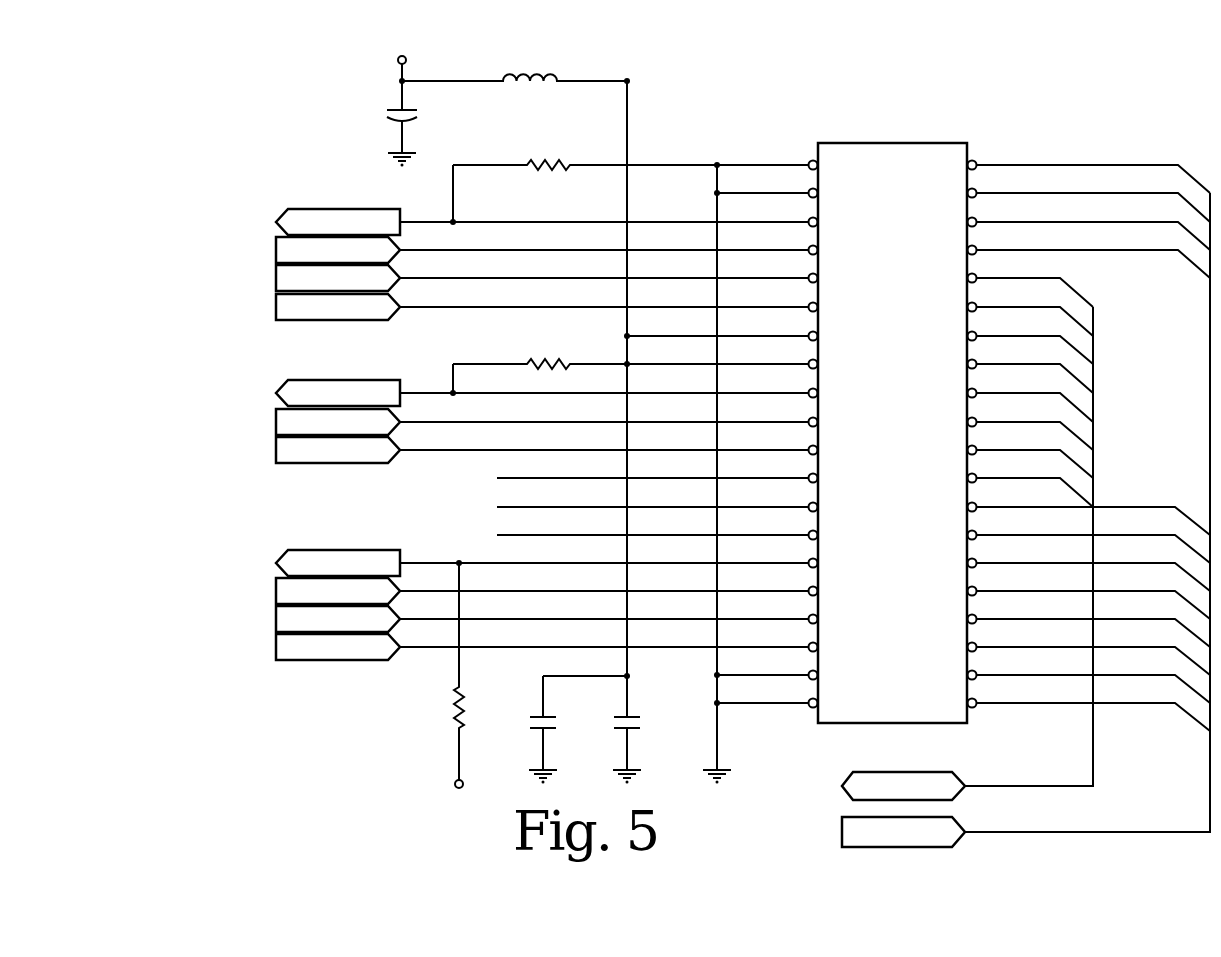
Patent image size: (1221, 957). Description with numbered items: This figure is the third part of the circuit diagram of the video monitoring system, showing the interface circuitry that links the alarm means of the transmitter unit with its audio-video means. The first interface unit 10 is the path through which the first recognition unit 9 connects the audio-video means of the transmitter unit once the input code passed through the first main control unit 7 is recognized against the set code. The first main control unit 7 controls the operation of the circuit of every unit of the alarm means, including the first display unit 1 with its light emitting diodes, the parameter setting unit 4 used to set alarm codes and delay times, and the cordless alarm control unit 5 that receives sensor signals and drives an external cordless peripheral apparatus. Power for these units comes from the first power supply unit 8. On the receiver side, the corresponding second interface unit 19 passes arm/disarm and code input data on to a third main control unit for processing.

The first interface unit 10 is at (382, 696).
The second interface unit 19 is at (722, 435).
The first main control unit 7 is at (442, 675).
The first power supply unit 8 is at (630, 176).
The first recognition unit 9 is at (630, 362).
The first display unit 1 is at (652, 729).
The parameter setting unit 4 is at (552, 727).
The cordless alarm control unit 5 is at (408, 114).